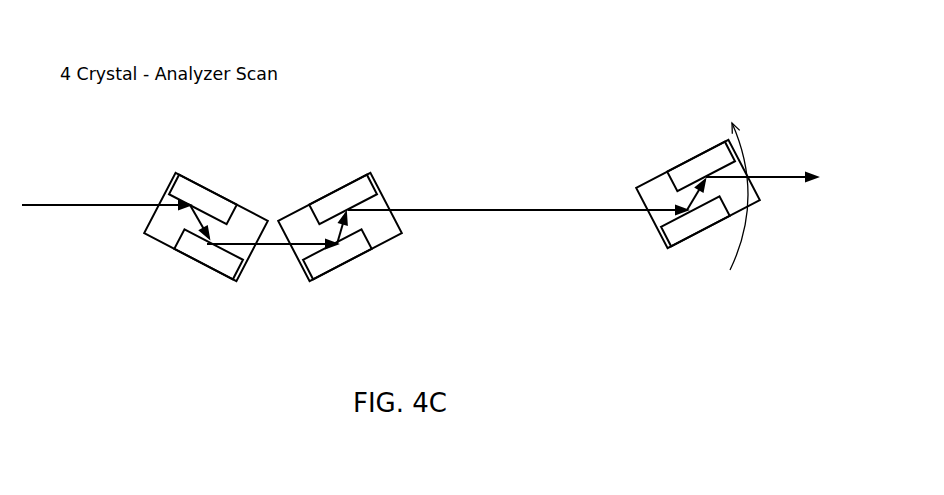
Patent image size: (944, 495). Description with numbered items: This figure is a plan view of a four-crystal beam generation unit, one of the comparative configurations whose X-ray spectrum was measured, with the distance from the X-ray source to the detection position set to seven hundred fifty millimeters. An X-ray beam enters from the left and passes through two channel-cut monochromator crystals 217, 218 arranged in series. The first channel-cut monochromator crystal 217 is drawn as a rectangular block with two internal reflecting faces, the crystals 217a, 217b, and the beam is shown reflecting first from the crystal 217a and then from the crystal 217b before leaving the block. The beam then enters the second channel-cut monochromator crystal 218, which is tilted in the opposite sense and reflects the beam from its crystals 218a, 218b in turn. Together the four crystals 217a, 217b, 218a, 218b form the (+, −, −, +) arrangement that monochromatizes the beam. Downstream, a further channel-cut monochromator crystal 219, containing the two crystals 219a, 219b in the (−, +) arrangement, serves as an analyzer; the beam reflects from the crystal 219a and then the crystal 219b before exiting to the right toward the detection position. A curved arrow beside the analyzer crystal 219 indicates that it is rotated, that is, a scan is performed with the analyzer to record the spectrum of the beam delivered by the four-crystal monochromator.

The channel-cut monochromator crystal 217 is at (189, 174).
The crystal 217a is at (223, 193).
The crystal 217b is at (197, 265).
The channel-cut monochromator crystal 218 is at (321, 193).
The crystal 218a is at (342, 270).
The crystal 218b is at (358, 177).
The channel-cut monochromator crystal 219 is at (668, 165).
The crystal 219a is at (690, 240).
The crystal 219b is at (697, 153).